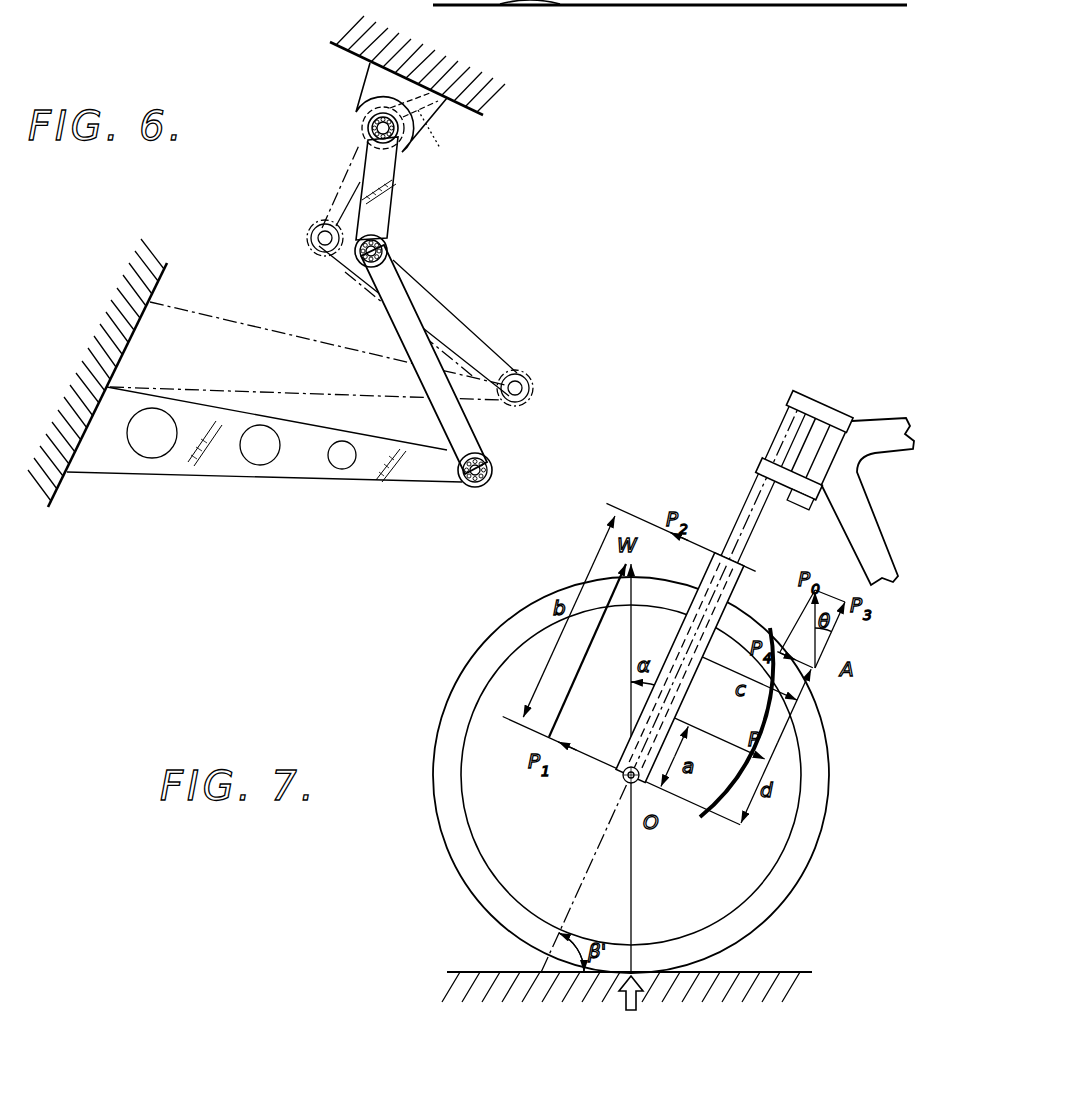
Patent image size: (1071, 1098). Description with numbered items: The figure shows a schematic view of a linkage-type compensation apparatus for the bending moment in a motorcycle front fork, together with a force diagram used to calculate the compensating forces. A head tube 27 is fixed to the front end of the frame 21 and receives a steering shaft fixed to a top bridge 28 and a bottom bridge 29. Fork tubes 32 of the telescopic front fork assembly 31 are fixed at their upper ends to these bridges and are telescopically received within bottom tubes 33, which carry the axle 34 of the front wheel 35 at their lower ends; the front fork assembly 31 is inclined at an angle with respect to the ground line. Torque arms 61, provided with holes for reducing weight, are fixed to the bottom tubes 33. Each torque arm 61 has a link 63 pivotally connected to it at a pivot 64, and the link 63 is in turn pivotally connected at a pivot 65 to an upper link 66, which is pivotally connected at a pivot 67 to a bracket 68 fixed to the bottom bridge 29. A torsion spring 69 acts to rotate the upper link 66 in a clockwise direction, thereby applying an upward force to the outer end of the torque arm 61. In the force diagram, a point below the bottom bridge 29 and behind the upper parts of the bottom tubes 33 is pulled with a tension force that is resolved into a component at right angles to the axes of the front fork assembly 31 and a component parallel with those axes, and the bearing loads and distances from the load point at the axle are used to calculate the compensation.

In FIG. 7, the frame 21 is at (905, 428).
In FIG. 7, the head tube 27 is at (838, 430).
In FIG. 7, the top bridge 28 is at (799, 391).
In FIG. 6, the bottom bridge 29 is at (349, 52).
In FIG. 7, the bottom bridge 29 is at (768, 468).
In FIG. 7, the telescopic front fork assembly 31 is at (740, 593).
In FIG. 7, the fork tubes 32 is at (749, 508).
In FIG. 6, the bottom tubes 33 is at (163, 279).
In FIG. 7, the bottom tubes 33 is at (698, 606).
In FIG. 7, the axle 34 is at (624, 780).
In FIG. 7, the front wheel 35 is at (443, 822).
In FIG. 6, the torque arm 61 is at (243, 478).
In FIG. 6, the link 63 is at (385, 325).
In FIG. 6, the pivot connection 64 is at (475, 488).
In FIG. 6, the pivot connection 65 is at (388, 250).
In FIG. 6, the upper link 66 is at (392, 210).
In FIG. 6, the pivot connection 67 is at (372, 126).
In FIG. 6, the bracket 68 is at (358, 92).
In FIG. 6, the torsion spring 69 is at (441, 140).